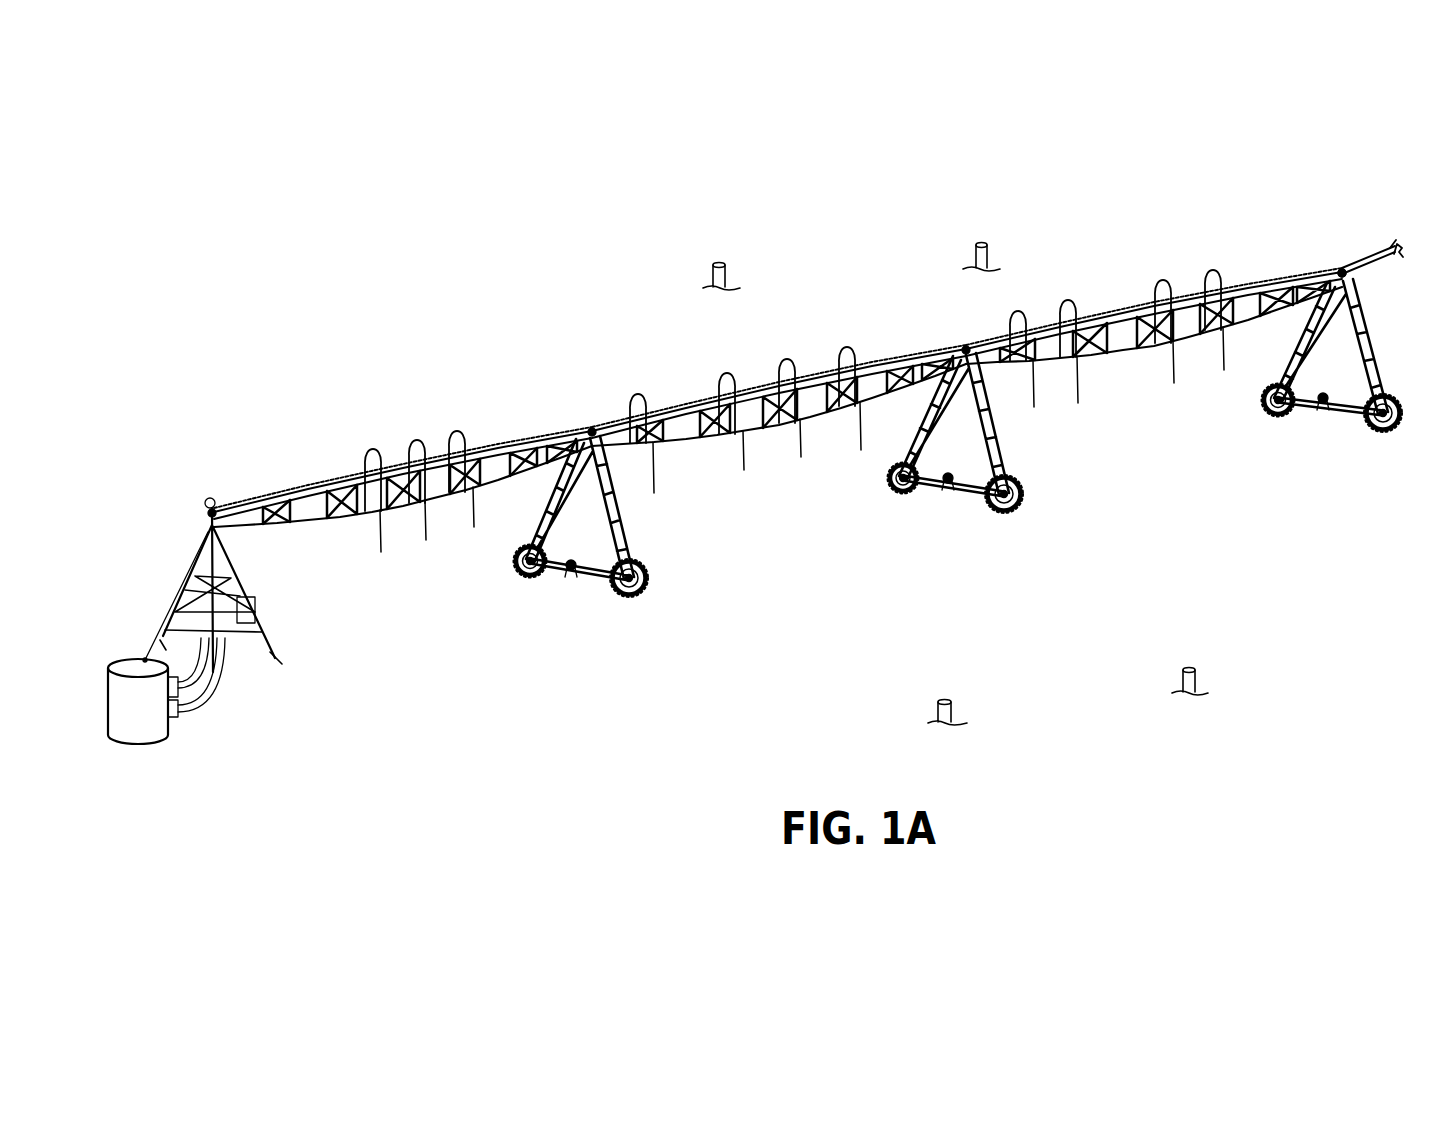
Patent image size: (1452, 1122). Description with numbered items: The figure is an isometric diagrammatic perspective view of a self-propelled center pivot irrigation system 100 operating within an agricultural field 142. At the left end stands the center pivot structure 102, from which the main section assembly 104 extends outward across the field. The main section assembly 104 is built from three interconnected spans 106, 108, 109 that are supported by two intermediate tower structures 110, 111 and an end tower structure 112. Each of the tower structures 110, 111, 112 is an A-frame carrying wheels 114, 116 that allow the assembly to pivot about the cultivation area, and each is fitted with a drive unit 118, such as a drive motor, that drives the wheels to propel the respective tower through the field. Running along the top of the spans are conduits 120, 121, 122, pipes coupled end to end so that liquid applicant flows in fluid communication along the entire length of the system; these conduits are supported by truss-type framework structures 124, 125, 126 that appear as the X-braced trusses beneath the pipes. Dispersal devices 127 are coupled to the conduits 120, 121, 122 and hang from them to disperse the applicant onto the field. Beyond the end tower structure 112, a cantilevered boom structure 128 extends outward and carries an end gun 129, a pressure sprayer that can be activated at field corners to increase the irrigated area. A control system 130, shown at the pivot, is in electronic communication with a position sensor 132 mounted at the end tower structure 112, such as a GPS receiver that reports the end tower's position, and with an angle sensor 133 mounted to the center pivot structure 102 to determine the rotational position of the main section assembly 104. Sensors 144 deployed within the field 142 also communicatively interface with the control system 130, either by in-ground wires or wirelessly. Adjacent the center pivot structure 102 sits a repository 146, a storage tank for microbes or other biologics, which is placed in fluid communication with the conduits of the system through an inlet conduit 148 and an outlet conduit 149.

The irrigation system 100 is at (598, 216).
The center pivot structure 102 is at (181, 590).
The main section assembly 104 is at (342, 379).
The span 106 is at (487, 441).
The span 108 is at (828, 366).
The span 109 is at (1178, 286).
The tower structure 110 is at (550, 515).
The tower structure 111 is at (888, 436).
The end tower structure 112 is at (1286, 355).
The wheel 114 is at (640, 602).
The wheel 116 is at (529, 588).
The drive unit 118 is at (578, 560).
The conduit 120 is at (322, 482).
The conduit 121 is at (696, 403).
The conduit 122 is at (1116, 309).
The truss-type framework structure 124 is at (377, 527).
The truss-type framework structure 125 is at (773, 435).
The truss-type framework structure 126 is at (1143, 350).
The dispersal device 127 is at (473, 520).
The cantilevered boom structure 128 is at (1374, 270).
The end gun 129 is at (1405, 250).
The control system 130 is at (248, 618).
The position sensor 132 is at (1342, 269).
The angle sensor 133 is at (208, 498).
The agricultural field 142 is at (757, 284).
The sensor 144 is at (727, 278).
The repository 146 is at (127, 742).
The inlet conduit 148 is at (207, 698).
The outlet conduit 149 is at (145, 658).